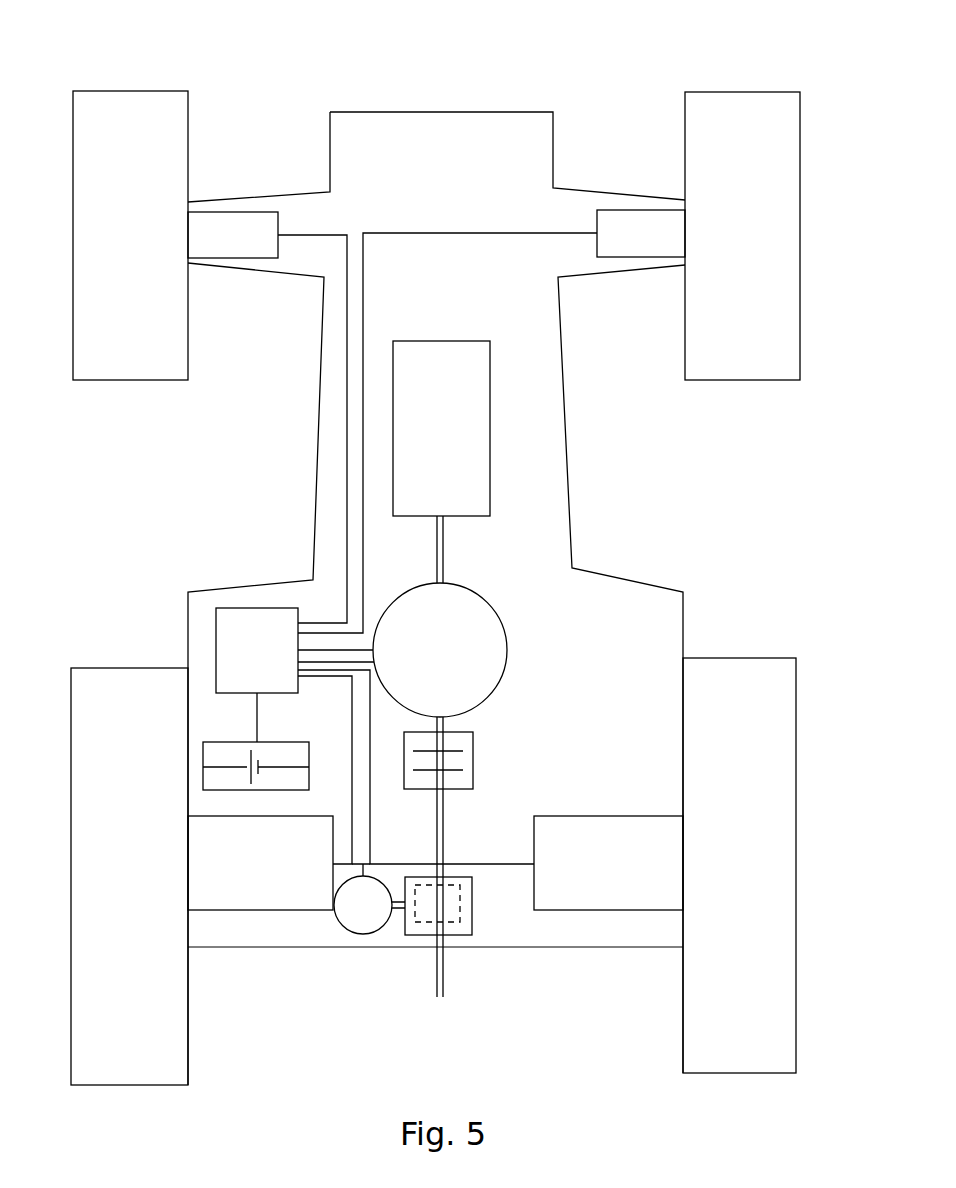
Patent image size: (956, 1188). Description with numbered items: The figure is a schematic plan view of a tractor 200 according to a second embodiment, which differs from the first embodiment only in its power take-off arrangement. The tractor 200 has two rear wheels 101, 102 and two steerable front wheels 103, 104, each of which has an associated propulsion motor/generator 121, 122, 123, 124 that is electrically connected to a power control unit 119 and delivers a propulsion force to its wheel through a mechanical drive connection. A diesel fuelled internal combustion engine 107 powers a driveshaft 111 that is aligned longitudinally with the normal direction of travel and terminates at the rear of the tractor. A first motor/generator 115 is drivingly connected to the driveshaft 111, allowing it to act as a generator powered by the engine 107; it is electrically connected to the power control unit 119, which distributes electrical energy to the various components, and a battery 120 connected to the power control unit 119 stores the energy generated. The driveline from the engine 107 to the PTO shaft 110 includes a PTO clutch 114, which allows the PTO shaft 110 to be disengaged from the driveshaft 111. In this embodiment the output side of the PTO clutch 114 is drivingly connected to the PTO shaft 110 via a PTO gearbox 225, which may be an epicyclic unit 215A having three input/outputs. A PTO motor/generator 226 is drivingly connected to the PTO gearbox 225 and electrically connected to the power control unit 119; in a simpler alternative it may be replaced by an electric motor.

The tractor 200 is at (256, 64).
The rear wheel 101 is at (87, 1085).
The rear wheel 102 is at (763, 1073).
The front wheel 103 is at (95, 380).
The front wheel 104 is at (757, 380).
The internal combustion engine 107 is at (446, 441).
The PTO shaft 110 is at (444, 975).
The driveshaft 111 is at (445, 724).
The PTO clutch 114 is at (473, 759).
The first motor/generator 115 is at (507, 630).
The power control unit 119 is at (262, 673).
The battery 120 is at (318, 718).
The propulsion motor/generator 121 is at (277, 910).
The propulsion motor/generator 122 is at (616, 910).
The propulsion motor/generator 123 is at (245, 258).
The propulsion motor/generator 124 is at (641, 257).
The PTO gearbox 225 is at (472, 922).
The epicyclic unit 215A is at (432, 912).
The PTO motor/generator 226 is at (363, 934).